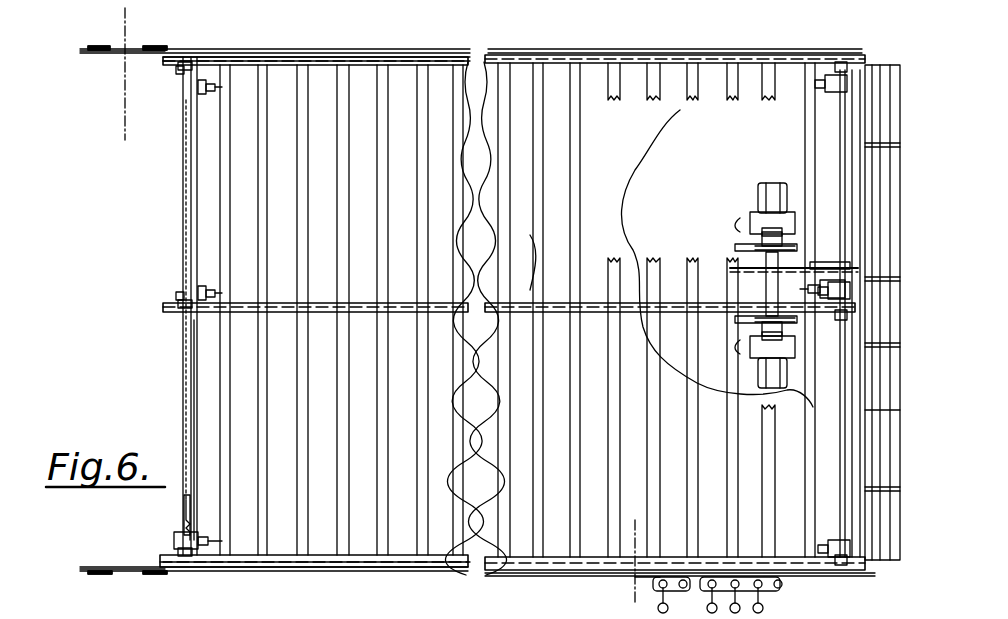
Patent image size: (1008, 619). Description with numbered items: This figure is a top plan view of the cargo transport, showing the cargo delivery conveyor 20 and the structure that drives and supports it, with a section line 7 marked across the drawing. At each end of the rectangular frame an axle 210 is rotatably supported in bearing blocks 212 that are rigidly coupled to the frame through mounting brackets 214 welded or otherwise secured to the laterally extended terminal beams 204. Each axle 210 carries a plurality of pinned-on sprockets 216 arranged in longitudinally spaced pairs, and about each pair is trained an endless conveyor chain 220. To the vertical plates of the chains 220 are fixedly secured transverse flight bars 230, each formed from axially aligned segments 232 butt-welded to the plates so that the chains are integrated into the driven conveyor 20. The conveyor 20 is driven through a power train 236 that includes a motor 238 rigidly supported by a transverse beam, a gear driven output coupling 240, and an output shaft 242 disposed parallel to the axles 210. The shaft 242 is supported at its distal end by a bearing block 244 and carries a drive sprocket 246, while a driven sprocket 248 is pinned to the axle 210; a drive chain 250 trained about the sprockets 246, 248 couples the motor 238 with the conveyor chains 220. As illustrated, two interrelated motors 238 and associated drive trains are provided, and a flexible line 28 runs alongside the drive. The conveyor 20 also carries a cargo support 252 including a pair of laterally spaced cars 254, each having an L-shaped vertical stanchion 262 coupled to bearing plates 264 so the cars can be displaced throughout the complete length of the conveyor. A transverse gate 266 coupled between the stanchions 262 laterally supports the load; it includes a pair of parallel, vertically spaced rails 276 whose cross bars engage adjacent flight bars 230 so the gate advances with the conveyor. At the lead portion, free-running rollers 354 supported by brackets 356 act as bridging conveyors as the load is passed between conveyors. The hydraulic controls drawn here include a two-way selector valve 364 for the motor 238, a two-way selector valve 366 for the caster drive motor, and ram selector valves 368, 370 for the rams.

The section line 7- 7 is at (160, 17).
The cargo delivery conveyor 20 is at (526, 56).
The flexible cable 28 is at (628, 151).
The terminal beams 204 is at (858, 462).
The axle 210 is at (188, 515).
The bearing blocks 212 is at (176, 88).
The mounting brackets 214 is at (218, 86).
The sprockets 216 is at (180, 70).
The endless conveyor chain 220 is at (170, 320).
The transverse flight bars 230 is at (218, 148).
The axially aligned segments 232 is at (388, 78).
The power train 236 is at (748, 210).
The motor 238 is at (782, 183).
The gear driven output coupling 240 is at (755, 238).
The output shaft 242 is at (768, 262).
The bearing block 244 is at (835, 245).
The drive sprocket 246 is at (755, 230).
The driven sprocket 248 is at (848, 283).
The drive chain 250 is at (850, 262).
The cargo support 252 is at (185, 238).
The cars 254 is at (135, 52).
The stanchion 262 is at (200, 60).
The bearing plates 264 is at (150, 56).
The transverse gate 266 is at (190, 416).
The rails 276 is at (188, 384).
The free-running rollers 354 is at (875, 390).
The brackets 356 is at (888, 65).
The two-way selector valve 364 is at (760, 590).
The two-way selector valve 366 is at (740, 592).
The ram selector valve 368 is at (778, 583).
The ram selector valve 370 is at (660, 582).